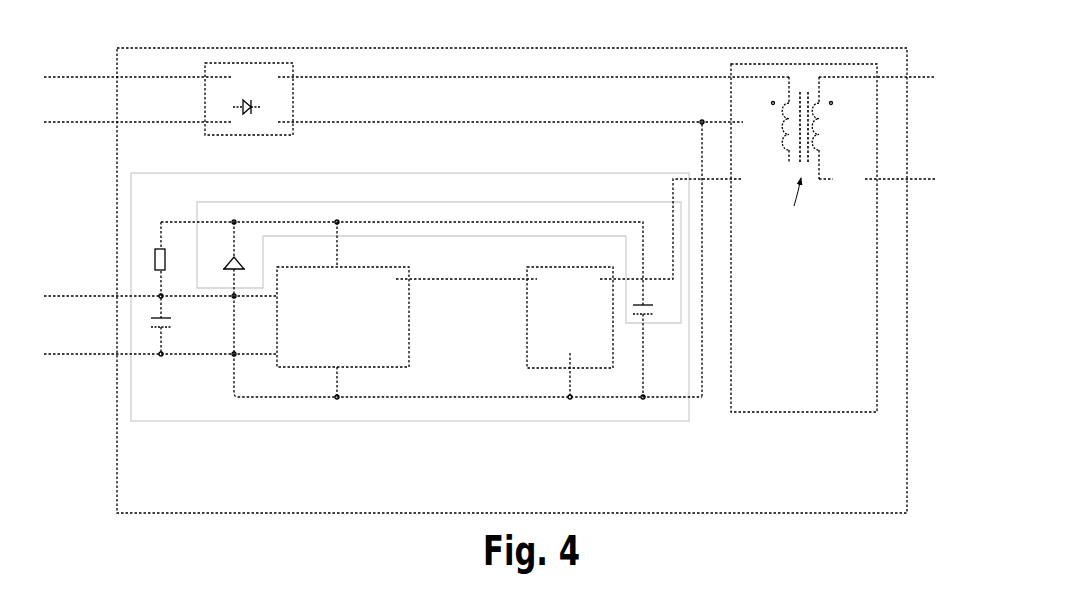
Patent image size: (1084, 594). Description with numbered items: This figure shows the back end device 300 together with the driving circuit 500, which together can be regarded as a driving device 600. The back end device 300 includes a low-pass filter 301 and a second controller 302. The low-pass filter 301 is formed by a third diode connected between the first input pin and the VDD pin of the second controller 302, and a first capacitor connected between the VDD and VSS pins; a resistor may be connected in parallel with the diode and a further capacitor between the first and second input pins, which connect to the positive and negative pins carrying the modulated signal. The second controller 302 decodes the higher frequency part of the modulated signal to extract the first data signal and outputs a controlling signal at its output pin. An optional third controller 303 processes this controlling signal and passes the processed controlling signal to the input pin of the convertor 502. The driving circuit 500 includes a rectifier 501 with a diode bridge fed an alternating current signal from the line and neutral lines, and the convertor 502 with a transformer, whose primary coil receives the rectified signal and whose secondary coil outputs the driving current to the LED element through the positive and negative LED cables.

The driving device 600 is at (478, 48).
The driving circuit 500 is at (511, 134).
The rectifier 501 is at (205, 134).
The convertor 502 is at (838, 412).
The back end device 300 is at (261, 421).
The low-pass filter 301 is at (447, 202).
The second controller 302 is at (377, 267).
The third controller 303 is at (553, 267).